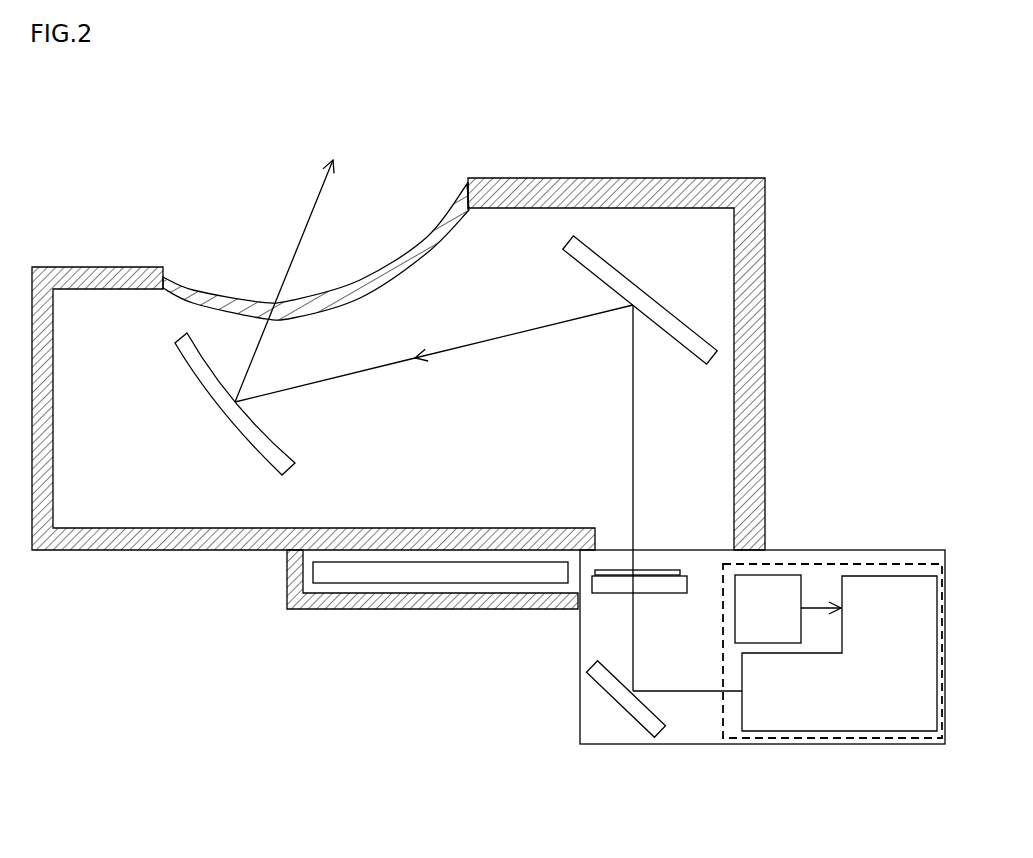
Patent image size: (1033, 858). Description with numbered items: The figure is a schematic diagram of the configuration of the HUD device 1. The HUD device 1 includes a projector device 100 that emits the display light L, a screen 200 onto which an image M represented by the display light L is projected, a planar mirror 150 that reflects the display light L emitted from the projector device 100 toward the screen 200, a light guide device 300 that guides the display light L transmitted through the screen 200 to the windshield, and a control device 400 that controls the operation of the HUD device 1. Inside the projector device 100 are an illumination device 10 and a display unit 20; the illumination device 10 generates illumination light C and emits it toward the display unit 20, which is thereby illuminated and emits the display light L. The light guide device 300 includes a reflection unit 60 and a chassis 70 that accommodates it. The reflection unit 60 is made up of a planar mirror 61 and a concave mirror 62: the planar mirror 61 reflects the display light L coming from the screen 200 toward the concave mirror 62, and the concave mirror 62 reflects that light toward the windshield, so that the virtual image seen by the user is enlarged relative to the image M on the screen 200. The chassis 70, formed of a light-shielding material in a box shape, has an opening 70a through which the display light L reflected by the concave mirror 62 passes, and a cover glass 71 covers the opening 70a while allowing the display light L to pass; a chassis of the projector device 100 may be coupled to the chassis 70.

The HUD device 1 is at (690, 141).
The illumination device 10 is at (768, 609).
The display unit 20 is at (839, 653).
The reflection unit 60 is at (409, 348).
The planar mirror 61 is at (622, 281).
The concave mirror 62 is at (203, 375).
The chassis 70 is at (560, 178).
The opening 70a is at (467, 194).
The cover glass 71 is at (190, 295).
The projector device 100 is at (808, 739).
The planar mirror 150 is at (645, 719).
The screen 200 is at (598, 583).
The light guide device 300 is at (173, 559).
The control device 400 is at (388, 572).
The display light L is at (488, 425).
The image M is at (658, 573).
The illumination light C is at (821, 589).